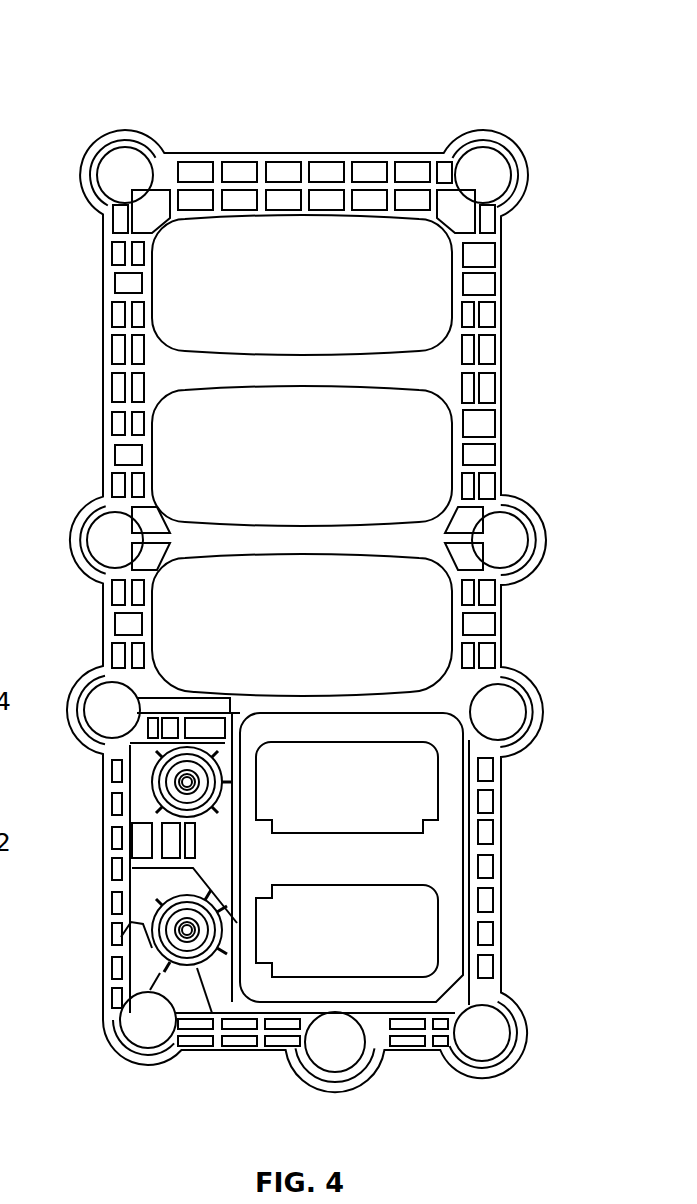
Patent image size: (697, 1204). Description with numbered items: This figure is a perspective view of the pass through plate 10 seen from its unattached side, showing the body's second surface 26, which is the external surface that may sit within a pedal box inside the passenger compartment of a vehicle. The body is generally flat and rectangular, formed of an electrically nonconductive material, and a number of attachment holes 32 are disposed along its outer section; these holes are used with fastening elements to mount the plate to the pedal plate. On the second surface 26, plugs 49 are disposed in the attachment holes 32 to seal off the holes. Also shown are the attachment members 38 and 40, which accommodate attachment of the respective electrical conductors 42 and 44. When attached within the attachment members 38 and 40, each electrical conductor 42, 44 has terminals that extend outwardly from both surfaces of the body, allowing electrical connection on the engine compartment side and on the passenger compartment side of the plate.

The pass through plate 10 is at (515, 76).
The second surface 26 is at (490, 347).
The attachment holes 32 is at (108, 158).
The plugs 49 is at (495, 167).
The attachment member 38 is at (164, 900).
The attachment member 40 is at (167, 813).
The electrical conductor 42 is at (182, 930).
The electrical conductor 44 is at (178, 784).